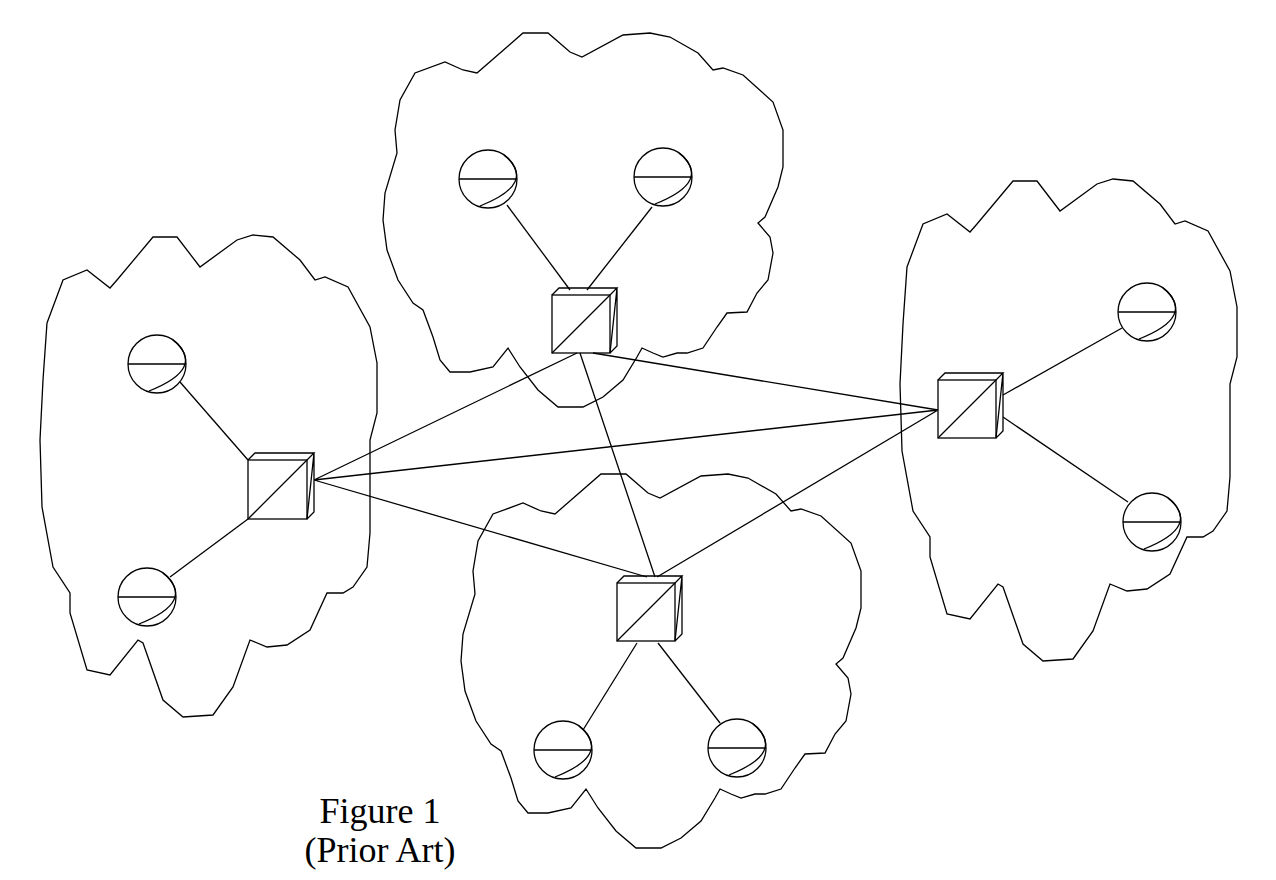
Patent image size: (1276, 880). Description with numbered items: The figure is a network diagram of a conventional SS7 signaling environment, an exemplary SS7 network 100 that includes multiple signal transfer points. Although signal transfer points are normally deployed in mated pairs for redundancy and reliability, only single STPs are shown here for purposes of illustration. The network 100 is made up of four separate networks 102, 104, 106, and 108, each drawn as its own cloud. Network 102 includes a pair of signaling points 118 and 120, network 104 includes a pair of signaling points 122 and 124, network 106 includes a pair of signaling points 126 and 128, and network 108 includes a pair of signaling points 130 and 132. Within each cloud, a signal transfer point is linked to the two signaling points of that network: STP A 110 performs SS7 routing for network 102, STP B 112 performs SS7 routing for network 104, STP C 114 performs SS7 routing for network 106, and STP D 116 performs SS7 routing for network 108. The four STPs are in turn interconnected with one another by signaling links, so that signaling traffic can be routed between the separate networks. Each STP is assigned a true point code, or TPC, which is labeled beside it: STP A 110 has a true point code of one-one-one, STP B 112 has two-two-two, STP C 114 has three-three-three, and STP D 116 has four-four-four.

The SS7 network 100 is at (115, 102).
The network 102 is at (785, 100).
The network 104 is at (1192, 212).
The network 106 is at (878, 678).
The network 108 is at (117, 262).
The STP A 110 is at (618, 315).
The STP B 112 is at (977, 370).
The STP C 114 is at (682, 597).
The STP D 116 is at (283, 453).
The signaling point 118 is at (472, 150).
The signaling point 120 is at (677, 148).
The signaling point 122 is at (1162, 340).
The signaling point 124 is at (1128, 540).
The signaling point 126 is at (753, 727).
The signaling point 128 is at (545, 727).
The signaling point 130 is at (170, 618).
The signaling point 132 is at (132, 380).